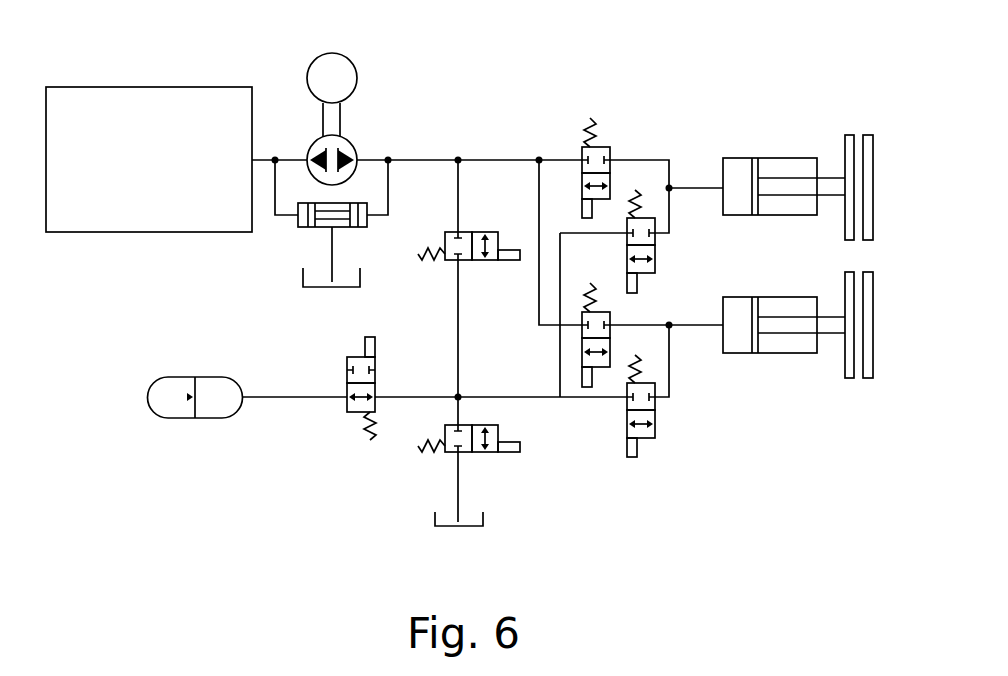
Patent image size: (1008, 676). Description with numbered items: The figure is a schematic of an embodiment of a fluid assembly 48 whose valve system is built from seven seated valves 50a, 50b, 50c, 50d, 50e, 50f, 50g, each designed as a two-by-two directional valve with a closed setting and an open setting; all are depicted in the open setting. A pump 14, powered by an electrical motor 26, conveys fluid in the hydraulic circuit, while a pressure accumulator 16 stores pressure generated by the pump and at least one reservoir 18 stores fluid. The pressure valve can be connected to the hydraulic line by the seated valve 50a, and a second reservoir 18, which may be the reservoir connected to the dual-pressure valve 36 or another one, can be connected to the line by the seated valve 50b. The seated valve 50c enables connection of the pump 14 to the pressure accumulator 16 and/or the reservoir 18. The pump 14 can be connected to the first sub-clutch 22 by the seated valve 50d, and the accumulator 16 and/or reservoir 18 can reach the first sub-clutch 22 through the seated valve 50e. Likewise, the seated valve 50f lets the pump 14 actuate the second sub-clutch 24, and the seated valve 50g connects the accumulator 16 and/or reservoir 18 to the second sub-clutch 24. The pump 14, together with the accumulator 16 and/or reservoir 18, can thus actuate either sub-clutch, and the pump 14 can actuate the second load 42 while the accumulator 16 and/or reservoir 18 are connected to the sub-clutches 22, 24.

The pump 14 is at (352, 147).
The pressure accumulator 16 is at (180, 418).
The reservoir 18 is at (303, 277).
The first sub-clutch 22 is at (873, 137).
The second sub-clutch 24 is at (873, 409).
The electrical motor 26 is at (343, 55).
The dual-pressure valve 36 is at (297, 225).
The second load 42 is at (148, 233).
The fluid assembly 48 is at (200, 528).
The seated valve 50a is at (347, 412).
The seated valve 50b is at (490, 452).
The seated valve 50c is at (445, 258).
The seated valve 50d is at (603, 147).
The seated valve 50e is at (657, 265).
The seated valve 50f is at (582, 345).
The seated valve 50g is at (645, 438).